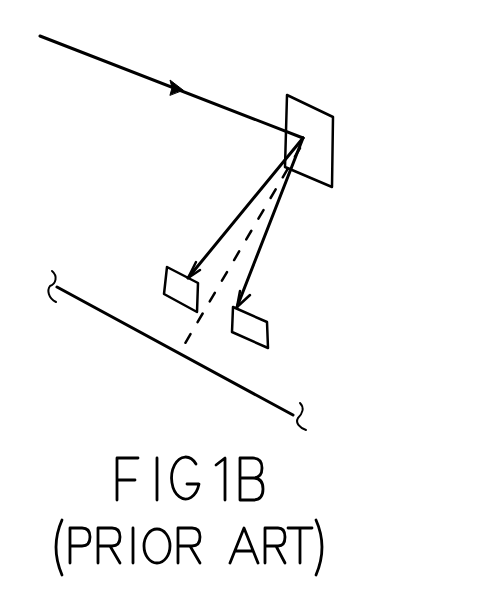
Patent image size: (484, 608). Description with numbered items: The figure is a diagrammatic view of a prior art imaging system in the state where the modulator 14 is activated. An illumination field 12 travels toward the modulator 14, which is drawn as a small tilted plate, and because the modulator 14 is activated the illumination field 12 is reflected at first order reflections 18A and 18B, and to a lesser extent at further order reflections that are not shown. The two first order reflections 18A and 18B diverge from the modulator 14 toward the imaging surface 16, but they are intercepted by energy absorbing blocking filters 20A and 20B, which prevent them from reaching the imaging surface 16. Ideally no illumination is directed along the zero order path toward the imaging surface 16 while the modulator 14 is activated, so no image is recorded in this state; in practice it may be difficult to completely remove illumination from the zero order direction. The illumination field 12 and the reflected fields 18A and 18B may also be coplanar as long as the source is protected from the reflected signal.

The illumination field 12 is at (130, 70).
The modulator 14 is at (317, 99).
The imaging surface 16 is at (133, 330).
The first order reflection 18A is at (228, 232).
The first order reflection 18B is at (274, 232).
The energy absorbing blocking filter 20A is at (163, 283).
The energy absorbing blocking filter 20B is at (268, 330).